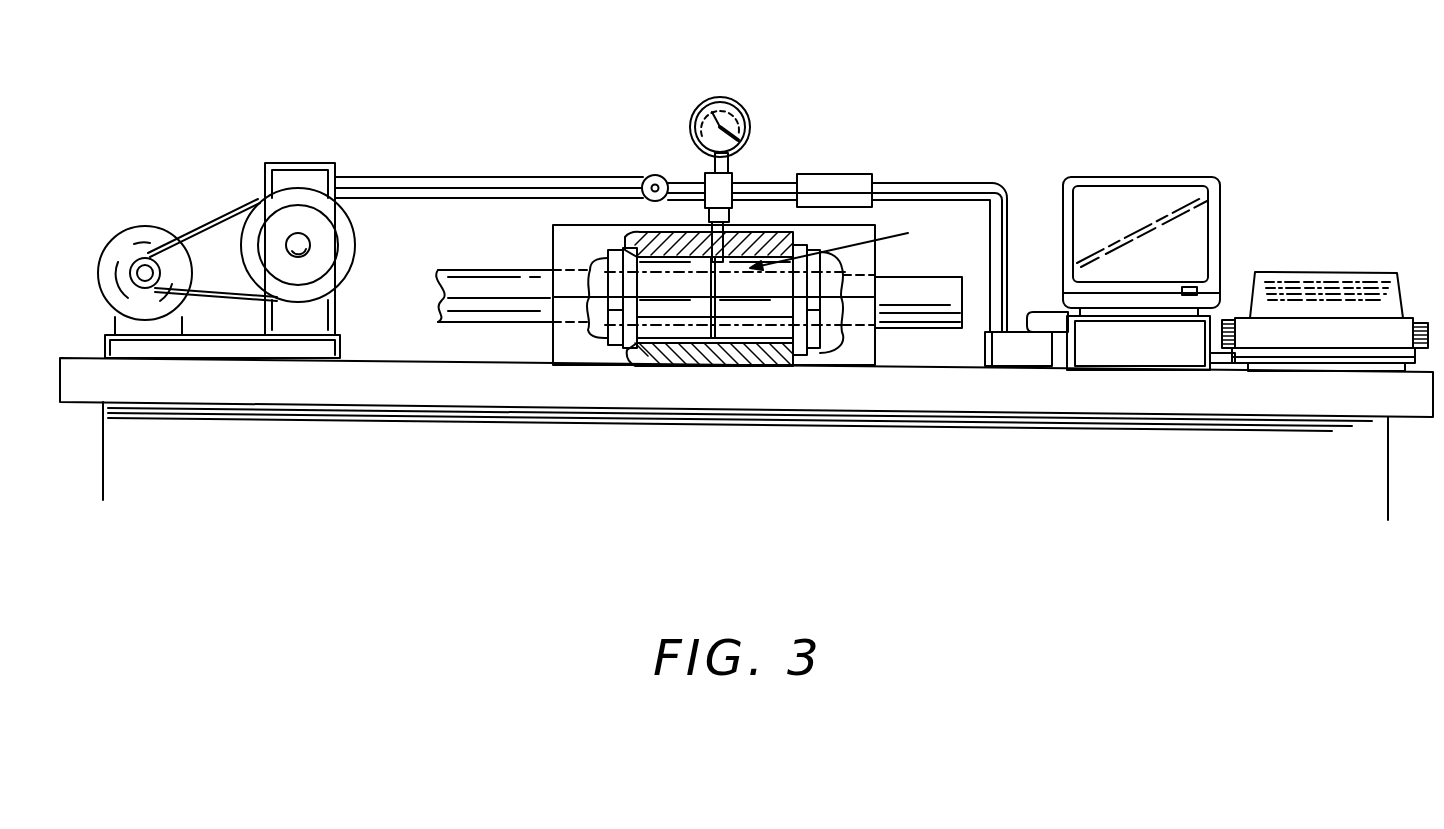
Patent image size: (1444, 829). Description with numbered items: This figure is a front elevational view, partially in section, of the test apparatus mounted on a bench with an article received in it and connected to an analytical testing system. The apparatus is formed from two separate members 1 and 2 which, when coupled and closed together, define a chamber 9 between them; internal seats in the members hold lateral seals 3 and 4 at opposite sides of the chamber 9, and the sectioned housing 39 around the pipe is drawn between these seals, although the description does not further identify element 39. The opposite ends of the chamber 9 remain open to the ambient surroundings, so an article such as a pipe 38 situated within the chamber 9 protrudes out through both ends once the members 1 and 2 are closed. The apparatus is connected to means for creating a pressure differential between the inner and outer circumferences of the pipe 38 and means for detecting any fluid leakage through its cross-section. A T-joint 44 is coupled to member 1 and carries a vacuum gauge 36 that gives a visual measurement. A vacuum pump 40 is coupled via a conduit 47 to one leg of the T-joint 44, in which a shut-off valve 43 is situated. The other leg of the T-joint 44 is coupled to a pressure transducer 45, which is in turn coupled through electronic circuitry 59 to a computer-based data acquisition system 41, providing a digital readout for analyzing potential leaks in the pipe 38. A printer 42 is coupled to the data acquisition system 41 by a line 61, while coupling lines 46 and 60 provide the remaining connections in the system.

The upper member 1 is at (563, 248).
The lower member 2 is at (567, 345).
The lateral seal 3 is at (628, 333).
The lateral seal 4 is at (797, 343).
The chamber 9 is at (840, 244).
The vacuum gauge 36 is at (723, 97).
The pipe 38 is at (922, 300).
The bearing housing 39 is at (707, 366).
The vacuum pump 40 is at (291, 173).
The computer-based data acquisition system 41 is at (1140, 177).
The printer 42 is at (1317, 272).
The shut-off valve 43 is at (652, 175).
The T-joint 44 is at (772, 184).
The pressure transducer 45 is at (832, 183).
The coupling line 46 is at (927, 184).
The conduit 47 is at (418, 183).
The electronic circuitry 59 is at (1018, 355).
The coupling line 60 is at (1033, 323).
The line 61 is at (1223, 363).